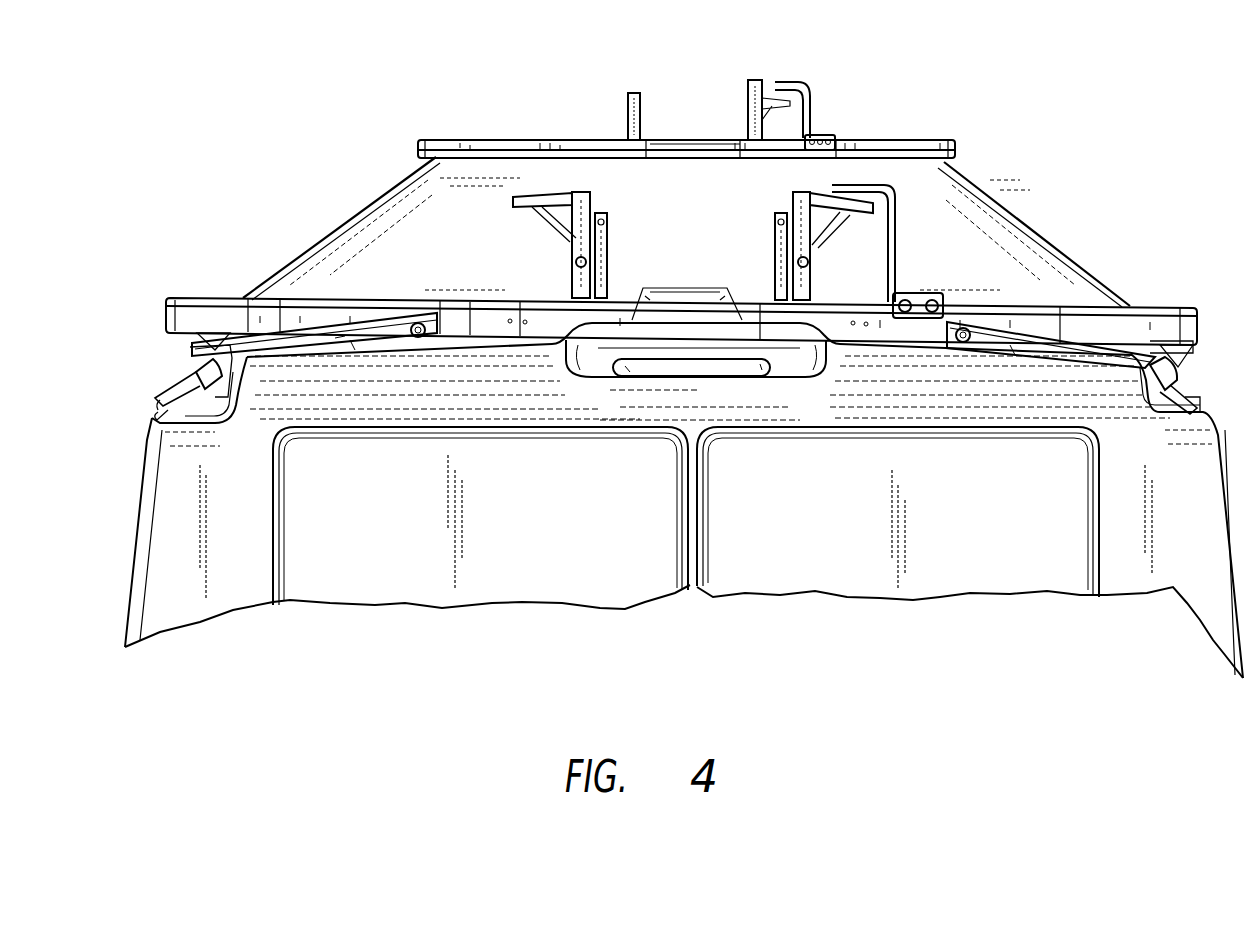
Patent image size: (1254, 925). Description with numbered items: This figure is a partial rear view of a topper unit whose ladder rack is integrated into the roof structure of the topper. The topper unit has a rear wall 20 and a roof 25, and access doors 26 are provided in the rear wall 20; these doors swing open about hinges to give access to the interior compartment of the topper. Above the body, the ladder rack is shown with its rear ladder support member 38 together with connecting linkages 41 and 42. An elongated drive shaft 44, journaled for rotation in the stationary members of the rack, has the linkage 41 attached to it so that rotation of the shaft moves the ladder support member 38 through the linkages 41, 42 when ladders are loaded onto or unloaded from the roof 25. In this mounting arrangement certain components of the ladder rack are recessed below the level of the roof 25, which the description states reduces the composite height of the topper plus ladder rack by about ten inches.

The rear wall 20 is at (836, 404).
The roof 25 is at (697, 216).
The access doors 26 is at (518, 507).
The rear ladder support member 38 is at (470, 140).
The connecting linkage 41 is at (508, 337).
The connecting linkage 42 is at (356, 320).
The drive shaft 44 is at (172, 386).